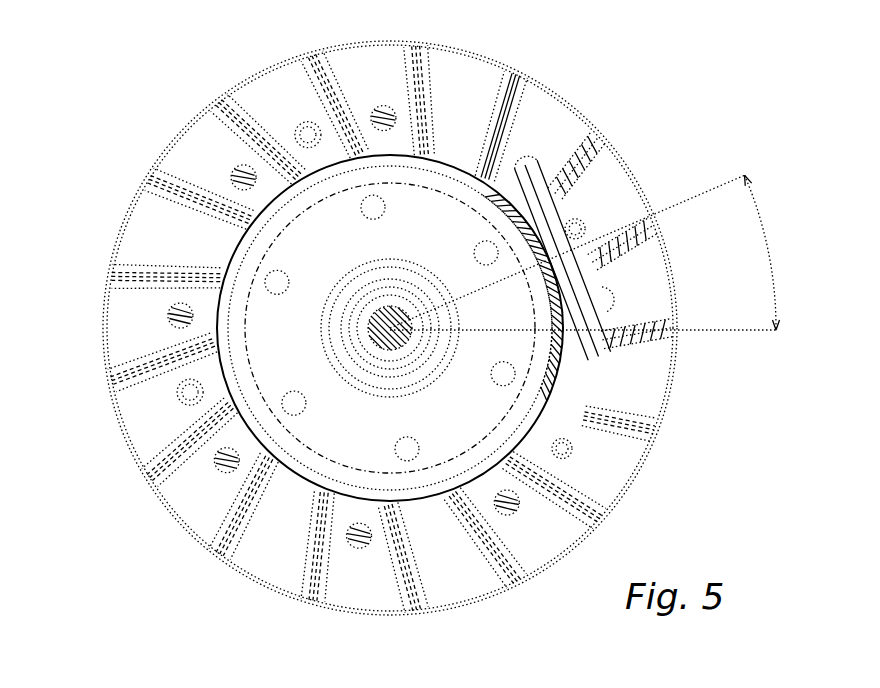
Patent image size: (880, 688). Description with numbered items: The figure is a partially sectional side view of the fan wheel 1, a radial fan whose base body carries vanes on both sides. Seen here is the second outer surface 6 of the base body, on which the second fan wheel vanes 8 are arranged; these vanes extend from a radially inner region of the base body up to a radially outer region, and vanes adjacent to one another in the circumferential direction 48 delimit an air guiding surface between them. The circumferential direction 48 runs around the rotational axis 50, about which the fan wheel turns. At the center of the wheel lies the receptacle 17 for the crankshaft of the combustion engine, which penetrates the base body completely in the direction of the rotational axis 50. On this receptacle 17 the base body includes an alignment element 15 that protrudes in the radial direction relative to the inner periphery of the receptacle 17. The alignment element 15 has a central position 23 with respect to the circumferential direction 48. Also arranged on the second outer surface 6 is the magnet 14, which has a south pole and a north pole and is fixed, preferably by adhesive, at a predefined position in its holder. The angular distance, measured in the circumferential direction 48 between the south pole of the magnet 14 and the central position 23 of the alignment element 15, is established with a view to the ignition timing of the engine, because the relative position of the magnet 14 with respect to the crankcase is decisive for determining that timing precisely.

The fan wheel 1 is at (118, 121).
The second outer surface 6 is at (197, 492).
The second fan wheel vanes 8 is at (158, 477).
The magnet 14 is at (548, 372).
The alignment element 15 is at (416, 313).
The receptacle 17 is at (383, 320).
The central position 23 is at (700, 193).
The circumferential direction 48 is at (479, 36).
The rotational axis 50 is at (388, 330).